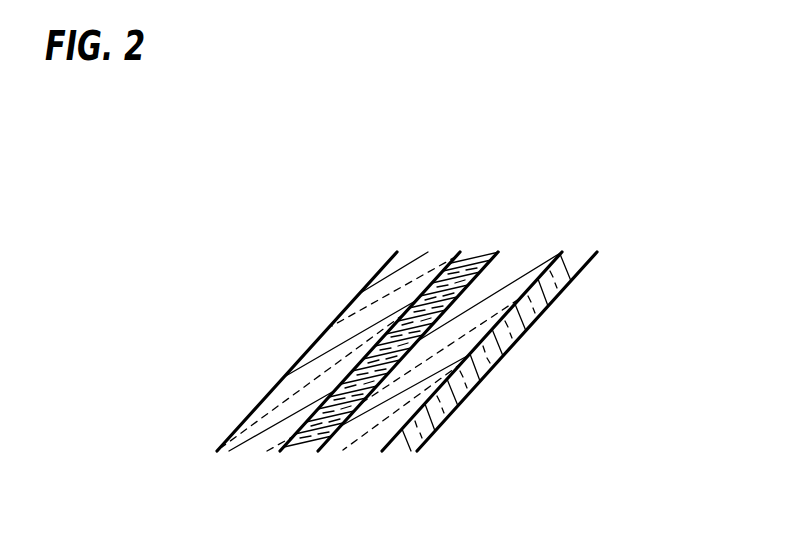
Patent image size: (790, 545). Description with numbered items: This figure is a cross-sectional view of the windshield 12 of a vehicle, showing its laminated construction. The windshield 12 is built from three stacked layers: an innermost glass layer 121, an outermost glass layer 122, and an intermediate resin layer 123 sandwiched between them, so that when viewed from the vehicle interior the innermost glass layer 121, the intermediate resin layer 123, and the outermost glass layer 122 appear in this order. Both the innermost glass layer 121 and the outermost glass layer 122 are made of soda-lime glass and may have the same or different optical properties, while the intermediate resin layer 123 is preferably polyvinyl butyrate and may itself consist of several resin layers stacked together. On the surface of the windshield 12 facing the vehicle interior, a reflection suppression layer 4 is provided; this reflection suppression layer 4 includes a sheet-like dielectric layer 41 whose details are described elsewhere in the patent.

The windshield 12 is at (367, 245).
The innermost glass layer 121 is at (442, 373).
The outermost glass layer 122 is at (348, 327).
The intermediate resin layer 123 is at (362, 372).
The reflection suppression layer 4 is at (582, 387).
The dielectric layer 41 is at (520, 337).